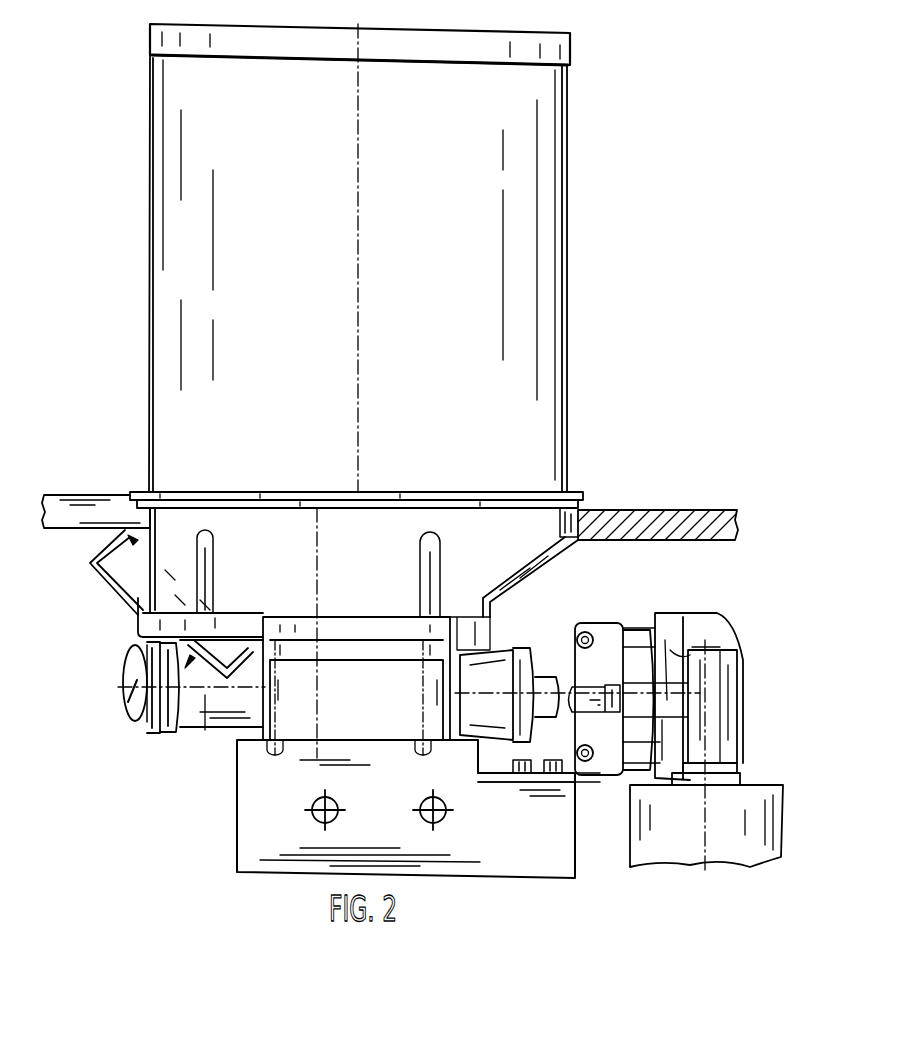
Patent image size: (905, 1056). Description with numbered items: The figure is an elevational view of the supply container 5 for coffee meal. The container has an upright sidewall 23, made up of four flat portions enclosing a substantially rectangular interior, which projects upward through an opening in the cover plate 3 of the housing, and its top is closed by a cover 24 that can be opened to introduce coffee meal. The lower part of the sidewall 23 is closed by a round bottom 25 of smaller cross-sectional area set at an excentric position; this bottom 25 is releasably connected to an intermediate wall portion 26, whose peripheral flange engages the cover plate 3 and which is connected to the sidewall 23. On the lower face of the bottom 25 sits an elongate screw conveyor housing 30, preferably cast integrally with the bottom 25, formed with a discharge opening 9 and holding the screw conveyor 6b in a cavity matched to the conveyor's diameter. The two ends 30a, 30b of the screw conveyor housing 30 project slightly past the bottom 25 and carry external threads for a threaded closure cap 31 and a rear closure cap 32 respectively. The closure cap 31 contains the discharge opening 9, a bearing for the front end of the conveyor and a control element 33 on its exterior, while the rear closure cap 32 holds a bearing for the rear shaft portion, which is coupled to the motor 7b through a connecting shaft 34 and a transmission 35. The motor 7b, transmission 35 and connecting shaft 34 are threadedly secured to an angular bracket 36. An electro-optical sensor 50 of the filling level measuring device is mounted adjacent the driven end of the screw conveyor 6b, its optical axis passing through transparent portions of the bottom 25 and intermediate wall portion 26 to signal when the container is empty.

The cover plate 3 is at (673, 510).
The supply container 5 is at (438, 313).
The screw conveyor 6b is at (145, 728).
The motor 7b is at (743, 840).
The discharge opening 9 is at (131, 729).
The sidewall 23 is at (572, 266).
The cover 24 is at (562, 52).
The bottom 25 is at (140, 617).
The intermediate wall portion 26 is at (503, 563).
The screw conveyor housing 30 is at (205, 729).
The front end of screw conveyor housing 30a is at (195, 650).
The rear end of screw conveyor housing 30b is at (472, 617).
The closure cap 31 is at (170, 735).
The rear closure cap 32 is at (517, 723).
The control element 33 is at (133, 680).
The connecting shaft 34 is at (580, 670).
The transmission 35 is at (710, 700).
The angular bracket 36 is at (613, 760).
The electro-optical sensor 50 is at (107, 547).